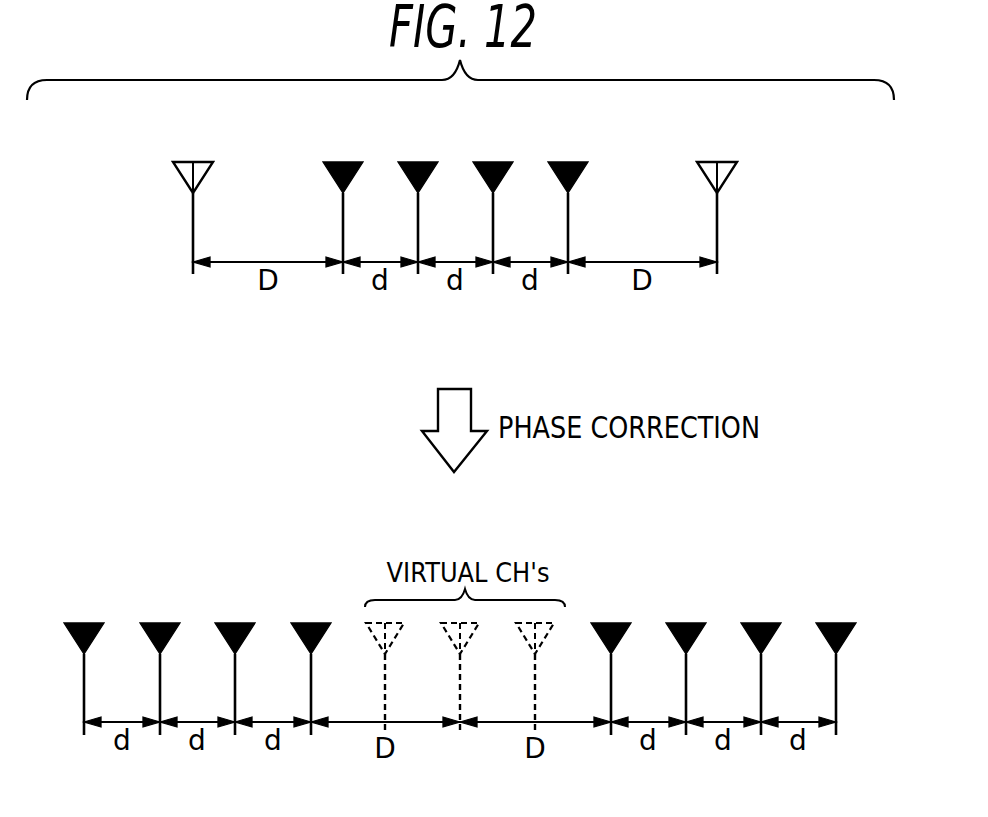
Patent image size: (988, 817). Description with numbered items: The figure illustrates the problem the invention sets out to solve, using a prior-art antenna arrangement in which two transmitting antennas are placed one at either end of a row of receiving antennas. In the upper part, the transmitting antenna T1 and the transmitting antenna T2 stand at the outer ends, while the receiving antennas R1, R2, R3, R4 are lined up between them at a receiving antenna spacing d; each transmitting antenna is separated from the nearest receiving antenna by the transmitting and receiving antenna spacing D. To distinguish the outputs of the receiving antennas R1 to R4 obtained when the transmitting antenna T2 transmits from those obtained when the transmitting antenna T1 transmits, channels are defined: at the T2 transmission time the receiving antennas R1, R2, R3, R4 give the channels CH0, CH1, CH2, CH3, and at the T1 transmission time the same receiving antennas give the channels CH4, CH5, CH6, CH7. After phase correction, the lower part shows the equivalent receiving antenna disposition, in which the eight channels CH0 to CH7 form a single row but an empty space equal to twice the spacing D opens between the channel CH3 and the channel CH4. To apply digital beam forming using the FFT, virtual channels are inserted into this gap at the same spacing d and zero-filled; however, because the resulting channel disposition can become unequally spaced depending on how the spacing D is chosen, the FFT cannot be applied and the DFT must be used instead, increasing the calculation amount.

The transmitting antenna T1 is at (185, 218).
The transmitting antenna T2 is at (726, 218).
The receiving antenna R1 is at (351, 218).
The receiving antenna R2 is at (426, 218).
The receiving antenna R3 is at (502, 218).
The receiving antenna R4 is at (577, 218).
The channel CH0 is at (89, 661).
The channel CH1 is at (166, 661).
The channel CH2 is at (241, 661).
The channel CH3 is at (317, 661).
The channel CH4 is at (616, 661).
The channel CH5 is at (692, 661).
The channel CH6 is at (767, 661).
The channel CH7 is at (842, 661).